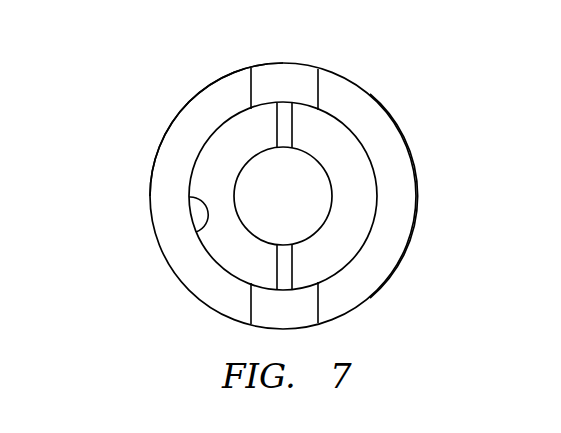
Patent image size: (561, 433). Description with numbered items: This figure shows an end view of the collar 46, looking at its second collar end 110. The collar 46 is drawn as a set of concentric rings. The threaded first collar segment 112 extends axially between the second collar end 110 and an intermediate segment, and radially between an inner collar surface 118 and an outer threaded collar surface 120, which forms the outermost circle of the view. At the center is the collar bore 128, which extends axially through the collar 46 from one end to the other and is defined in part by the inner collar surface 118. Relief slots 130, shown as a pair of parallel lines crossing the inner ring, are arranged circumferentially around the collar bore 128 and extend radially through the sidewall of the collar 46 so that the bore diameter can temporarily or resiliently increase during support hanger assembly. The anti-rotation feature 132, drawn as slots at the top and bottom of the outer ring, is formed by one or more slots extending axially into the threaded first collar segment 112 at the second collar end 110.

The collar 46 is at (479, 106).
The second collar end 110 is at (403, 171).
The threaded first collar segment 112 is at (430, 216).
The inner collar surface 118 is at (203, 231).
The outer threaded collar surface 120 is at (170, 124).
The collar bore 128 is at (306, 210).
The relief slots 130 is at (298, 126).
The anti-rotation feature 132 is at (288, 76).